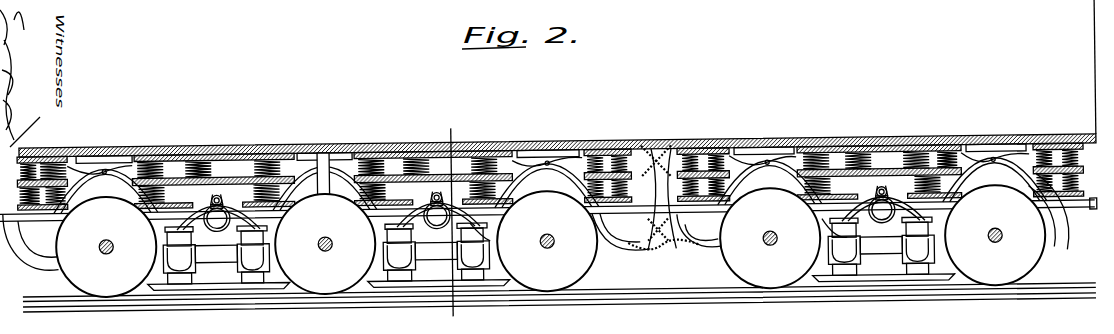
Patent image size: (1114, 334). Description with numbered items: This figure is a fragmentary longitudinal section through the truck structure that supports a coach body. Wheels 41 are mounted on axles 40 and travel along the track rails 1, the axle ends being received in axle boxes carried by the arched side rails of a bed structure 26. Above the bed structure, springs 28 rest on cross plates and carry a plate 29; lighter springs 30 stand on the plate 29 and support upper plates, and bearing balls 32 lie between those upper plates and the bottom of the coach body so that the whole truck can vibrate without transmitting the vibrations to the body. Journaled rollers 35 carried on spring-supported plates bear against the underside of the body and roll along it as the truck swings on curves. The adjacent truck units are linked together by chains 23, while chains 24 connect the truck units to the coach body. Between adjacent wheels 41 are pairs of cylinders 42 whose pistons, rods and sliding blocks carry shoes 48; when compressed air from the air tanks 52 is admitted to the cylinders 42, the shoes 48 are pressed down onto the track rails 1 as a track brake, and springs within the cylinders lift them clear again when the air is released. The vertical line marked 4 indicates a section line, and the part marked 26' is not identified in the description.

The track rails 1 is at (705, 299).
The section line 4- 4 is at (453, 219).
The chains 23 is at (652, 244).
The chains 24 is at (655, 151).
The bed structure 26 is at (535, 230).
The king post 26' is at (337, 171).
The springs 28 is at (392, 188).
The plate 29 is at (590, 177).
The springs 30 is at (486, 154).
The bearing balls 32 is at (178, 153).
The journaled rollers 35 is at (548, 160).
The axles 40 is at (548, 246).
The wheels 41 is at (767, 283).
The cylinders 42 is at (247, 263).
The shoes 48 is at (380, 280).
The air tanks 52 is at (217, 216).